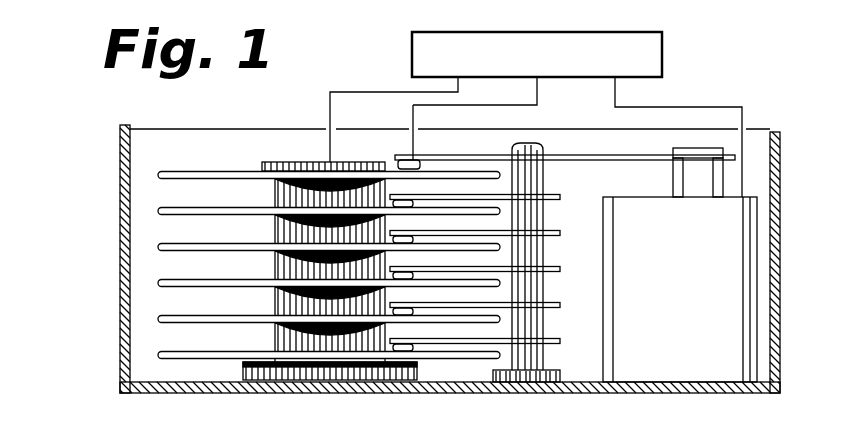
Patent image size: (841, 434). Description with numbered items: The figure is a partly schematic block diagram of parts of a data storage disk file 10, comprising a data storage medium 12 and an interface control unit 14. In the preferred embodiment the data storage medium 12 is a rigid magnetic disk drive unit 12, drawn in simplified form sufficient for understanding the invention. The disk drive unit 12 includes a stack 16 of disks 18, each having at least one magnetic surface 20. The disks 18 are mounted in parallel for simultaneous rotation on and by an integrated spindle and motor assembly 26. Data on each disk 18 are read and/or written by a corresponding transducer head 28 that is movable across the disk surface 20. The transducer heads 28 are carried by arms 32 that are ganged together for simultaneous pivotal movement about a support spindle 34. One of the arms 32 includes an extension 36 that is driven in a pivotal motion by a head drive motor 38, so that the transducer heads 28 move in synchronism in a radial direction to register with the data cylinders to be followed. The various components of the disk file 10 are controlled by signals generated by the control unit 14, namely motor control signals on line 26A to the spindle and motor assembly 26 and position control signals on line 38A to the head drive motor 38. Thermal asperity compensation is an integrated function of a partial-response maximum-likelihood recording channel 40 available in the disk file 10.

The data storage disk file 10 is at (752, 45).
The data storage medium 12 is at (284, 110).
The interface control unit 14 is at (662, 55).
The stack 16 is at (223, 137).
The disks 18 is at (158, 286).
The magnetic surface 20 is at (178, 172).
The integrated spindle and motor assembly 26 is at (328, 337).
The line 26A is at (373, 92).
The transducer head 28 is at (407, 160).
The arms 32 is at (556, 268).
The support spindle 34 is at (525, 384).
The extension 36 is at (605, 155).
The head drive motor 38 is at (670, 360).
The line 38A is at (653, 107).
The partial-response maximum-likelihood (PRML) recording channel 40 is at (725, 180).